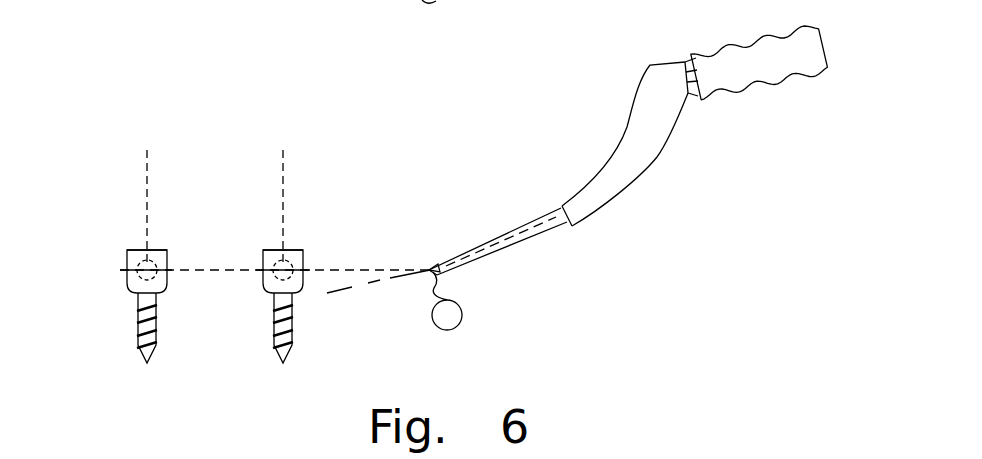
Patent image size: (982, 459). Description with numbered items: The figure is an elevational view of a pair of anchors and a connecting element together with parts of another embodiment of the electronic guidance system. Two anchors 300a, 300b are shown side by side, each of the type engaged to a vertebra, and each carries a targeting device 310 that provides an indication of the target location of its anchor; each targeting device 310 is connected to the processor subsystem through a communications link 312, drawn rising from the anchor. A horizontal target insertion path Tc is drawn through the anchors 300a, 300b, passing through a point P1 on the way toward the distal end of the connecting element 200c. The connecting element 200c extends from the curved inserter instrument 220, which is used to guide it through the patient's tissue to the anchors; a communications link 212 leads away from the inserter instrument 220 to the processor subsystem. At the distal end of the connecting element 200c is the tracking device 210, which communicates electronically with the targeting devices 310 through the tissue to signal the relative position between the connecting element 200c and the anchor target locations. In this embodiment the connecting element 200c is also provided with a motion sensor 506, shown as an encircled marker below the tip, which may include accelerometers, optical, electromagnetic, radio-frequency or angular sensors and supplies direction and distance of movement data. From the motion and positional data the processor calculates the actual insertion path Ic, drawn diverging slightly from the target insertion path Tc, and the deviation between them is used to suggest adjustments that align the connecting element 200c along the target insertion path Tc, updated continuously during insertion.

The anchor 300a is at (264, 300).
The anchor 300b is at (166, 300).
The targeting device 310 is at (125, 259).
The communications link 312 is at (147, 168).
The target insertion path Tc is at (196, 270).
The point on trajectory P1 is at (357, 268).
The actual insertion path Ic is at (353, 291).
The tracking device 210 is at (437, 266).
The connecting element 200c is at (528, 247).
The inserter instrument 220 is at (659, 163).
The communications link 212 is at (655, 62).
The motion sensor 506 is at (440, 330).